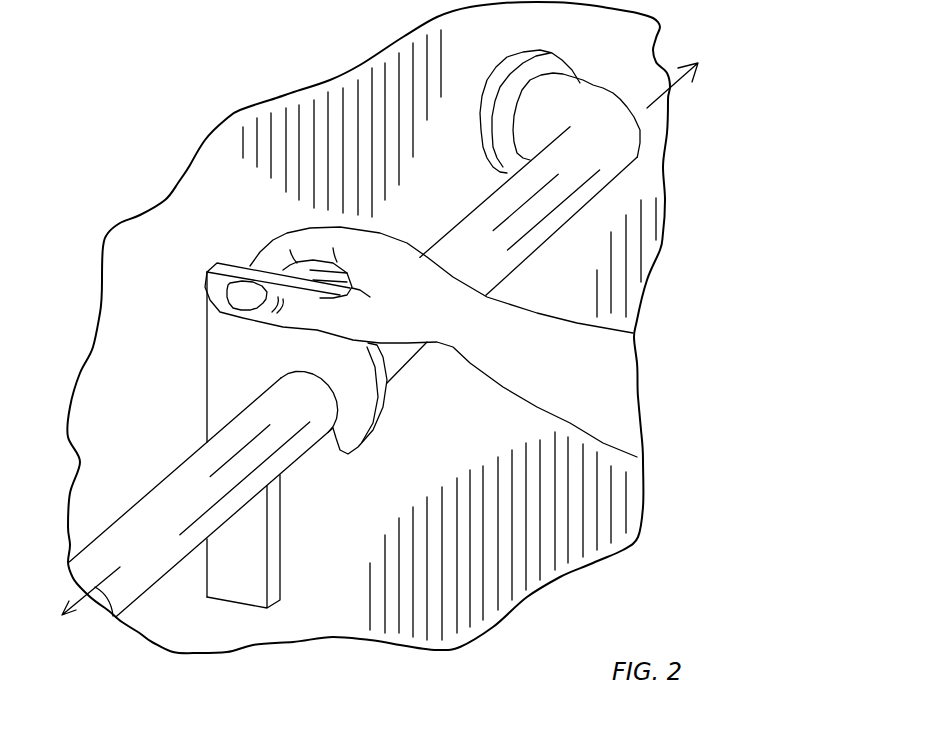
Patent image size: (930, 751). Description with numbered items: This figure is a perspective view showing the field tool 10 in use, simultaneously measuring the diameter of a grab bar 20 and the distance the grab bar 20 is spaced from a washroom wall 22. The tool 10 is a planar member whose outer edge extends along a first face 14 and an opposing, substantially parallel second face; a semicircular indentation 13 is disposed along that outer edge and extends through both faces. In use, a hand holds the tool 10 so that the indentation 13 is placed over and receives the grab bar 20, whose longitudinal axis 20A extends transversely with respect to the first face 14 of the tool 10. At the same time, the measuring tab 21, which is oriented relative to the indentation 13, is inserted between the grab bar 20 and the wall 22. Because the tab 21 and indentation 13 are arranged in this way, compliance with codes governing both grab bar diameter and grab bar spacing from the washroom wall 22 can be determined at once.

The field tool 10 is at (400, 433).
The indentation 13 is at (247, 410).
The first face 14 is at (260, 363).
The grab bar 20 is at (553, 237).
The longitudinal axis 20A is at (670, 86).
The measuring tab 21 is at (235, 603).
The washroom wall 22 is at (163, 320).